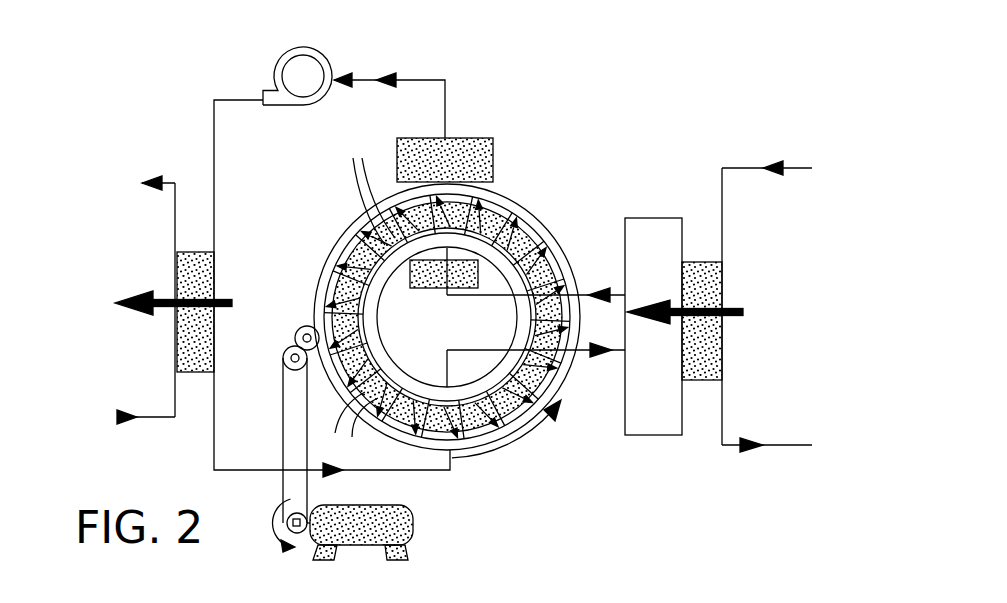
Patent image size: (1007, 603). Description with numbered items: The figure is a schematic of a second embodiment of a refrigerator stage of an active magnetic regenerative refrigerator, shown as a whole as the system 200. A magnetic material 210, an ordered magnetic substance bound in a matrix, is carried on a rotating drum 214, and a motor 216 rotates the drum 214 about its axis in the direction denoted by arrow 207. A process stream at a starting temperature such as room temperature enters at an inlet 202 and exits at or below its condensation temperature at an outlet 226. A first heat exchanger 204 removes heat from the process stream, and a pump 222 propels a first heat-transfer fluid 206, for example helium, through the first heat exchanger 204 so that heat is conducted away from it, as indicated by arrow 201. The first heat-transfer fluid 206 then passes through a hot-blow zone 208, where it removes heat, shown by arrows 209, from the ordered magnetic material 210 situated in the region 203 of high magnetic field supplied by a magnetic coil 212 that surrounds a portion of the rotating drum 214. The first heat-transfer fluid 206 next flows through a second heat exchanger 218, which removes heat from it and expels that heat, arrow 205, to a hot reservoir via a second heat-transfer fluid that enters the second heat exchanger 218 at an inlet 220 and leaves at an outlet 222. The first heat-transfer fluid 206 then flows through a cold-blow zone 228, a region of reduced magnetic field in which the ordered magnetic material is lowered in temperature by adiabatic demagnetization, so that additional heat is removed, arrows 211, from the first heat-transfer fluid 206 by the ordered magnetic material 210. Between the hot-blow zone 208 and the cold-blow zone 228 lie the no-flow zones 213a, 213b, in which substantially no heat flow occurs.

The filter regeneration system 200 is at (568, 90).
The arrow 201 is at (733, 317).
The inlet 202 is at (658, 299).
The region of high magnetic field 203 is at (508, 192).
The first heat exchanger 204 is at (717, 280).
The arrow 205 is at (140, 313).
The first heat-transfer fluid 206 is at (645, 218).
The arrow 207 is at (533, 430).
The hot-blow zone 208 is at (503, 205).
The arrows 209 is at (363, 185).
The magnetic material 210 is at (327, 253).
The arrows 211 is at (346, 428).
The magnetic coil 212 is at (460, 138).
The no-flow zone 213a is at (323, 283).
The no-flow zone 213b is at (568, 280).
The rotating drum 214 is at (313, 298).
The motor 216 is at (413, 520).
The second heat exchanger 218 is at (177, 337).
The inlet 220 is at (128, 183).
The pump 222 is at (280, 72).
The outlet 226 is at (658, 402).
The cold-blow zone 228 is at (482, 422).